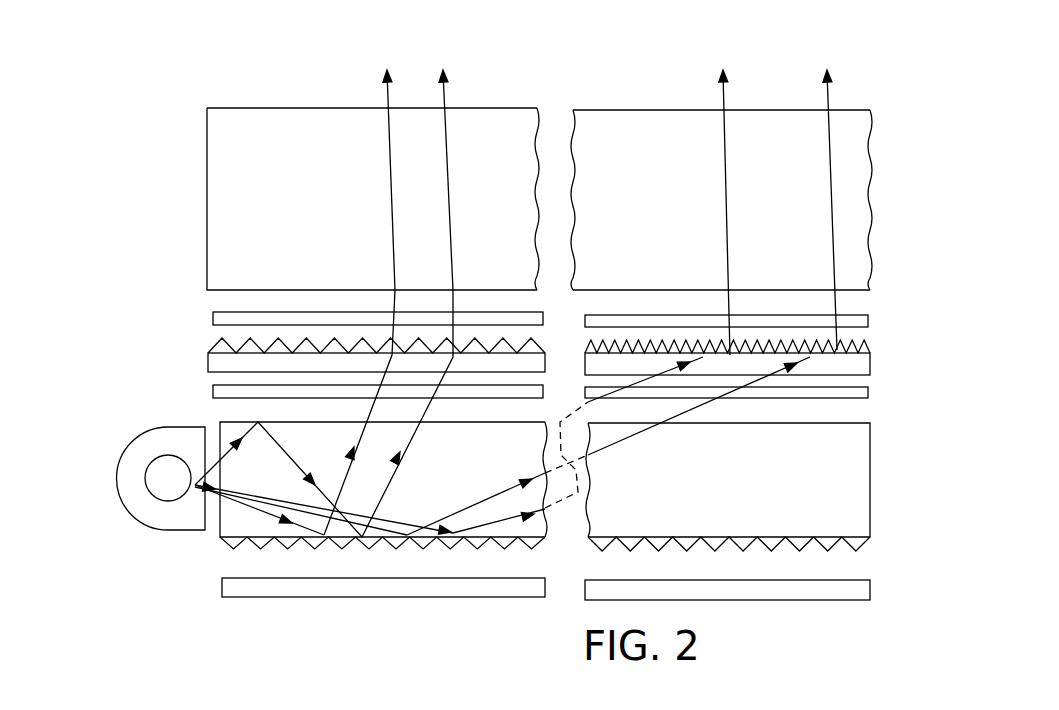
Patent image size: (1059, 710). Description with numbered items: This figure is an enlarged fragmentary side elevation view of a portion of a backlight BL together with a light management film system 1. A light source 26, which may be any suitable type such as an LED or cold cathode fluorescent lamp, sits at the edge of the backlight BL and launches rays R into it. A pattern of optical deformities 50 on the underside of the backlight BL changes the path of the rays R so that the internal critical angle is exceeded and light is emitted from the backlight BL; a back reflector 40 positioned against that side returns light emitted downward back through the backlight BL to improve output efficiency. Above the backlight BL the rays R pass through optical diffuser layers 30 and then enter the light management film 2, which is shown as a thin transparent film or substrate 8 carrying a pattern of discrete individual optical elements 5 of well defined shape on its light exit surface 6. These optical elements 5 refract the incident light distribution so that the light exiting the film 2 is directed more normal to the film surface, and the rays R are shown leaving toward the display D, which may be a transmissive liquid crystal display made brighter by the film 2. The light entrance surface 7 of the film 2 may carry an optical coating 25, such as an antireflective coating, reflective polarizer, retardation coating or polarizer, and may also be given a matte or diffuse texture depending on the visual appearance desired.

The light management film system 1 is at (160, 397).
The light management film 2 is at (160, 351).
The optical elements 5 is at (337, 340).
The light exit surface 6 is at (278, 350).
The light entrance surface 7 is at (253, 375).
The transparent film or substrate 8 is at (876, 366).
The optical coating 25 is at (822, 378).
The light source 26 is at (130, 521).
The optical diffuser layers 30 is at (492, 320).
The back reflector 40 is at (822, 589).
The optical deformities 50 is at (468, 535).
The backlight BL is at (222, 558).
The display D is at (767, 118).
The rays R is at (272, 497).